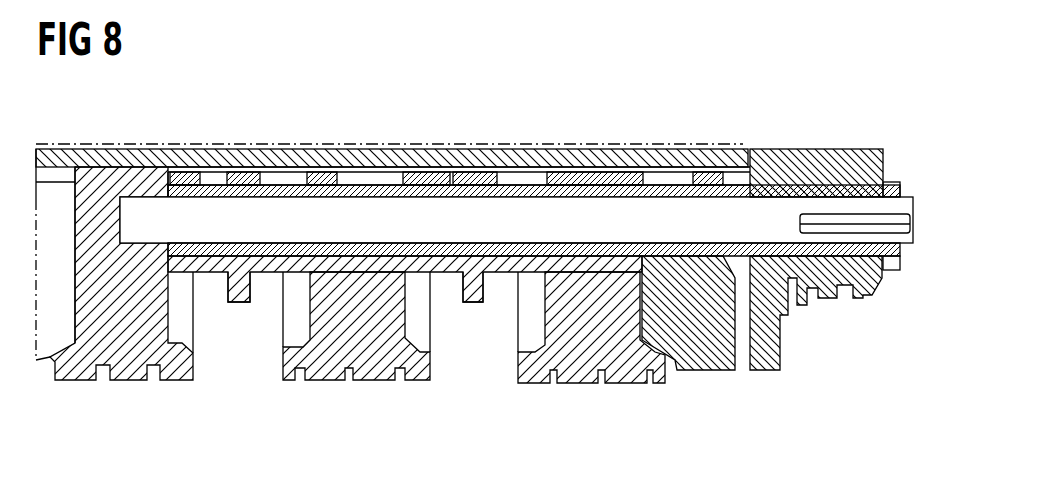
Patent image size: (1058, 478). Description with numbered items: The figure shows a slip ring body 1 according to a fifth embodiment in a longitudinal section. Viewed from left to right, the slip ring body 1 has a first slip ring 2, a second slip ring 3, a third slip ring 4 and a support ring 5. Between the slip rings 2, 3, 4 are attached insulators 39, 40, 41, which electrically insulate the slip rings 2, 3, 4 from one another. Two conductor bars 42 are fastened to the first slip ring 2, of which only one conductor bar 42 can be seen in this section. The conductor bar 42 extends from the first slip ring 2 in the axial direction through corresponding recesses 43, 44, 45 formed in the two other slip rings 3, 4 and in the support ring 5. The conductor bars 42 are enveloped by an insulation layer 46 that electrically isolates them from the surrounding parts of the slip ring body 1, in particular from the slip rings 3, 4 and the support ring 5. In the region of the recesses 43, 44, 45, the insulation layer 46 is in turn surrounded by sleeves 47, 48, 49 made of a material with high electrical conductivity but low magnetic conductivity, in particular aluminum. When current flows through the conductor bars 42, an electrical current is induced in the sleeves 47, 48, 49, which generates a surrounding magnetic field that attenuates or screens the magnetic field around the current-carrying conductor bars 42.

The slip ring body 1 is at (443, 122).
The first slip ring 2 is at (120, 362).
The second slip ring 3 is at (333, 363).
The third slip ring 4 is at (570, 366).
The support ring 5 is at (757, 371).
The insulator 39 is at (233, 302).
The insulator 40 is at (472, 302).
The insulator 41 is at (703, 372).
The conductor bar 42 is at (190, 205).
The recess 43 is at (367, 205).
The recess 44 is at (650, 210).
The recess 45 is at (792, 216).
The insulation layer 46 is at (282, 175).
The sleeve 47 is at (380, 170).
The sleeve 48 is at (588, 168).
The sleeve 49 is at (768, 167).